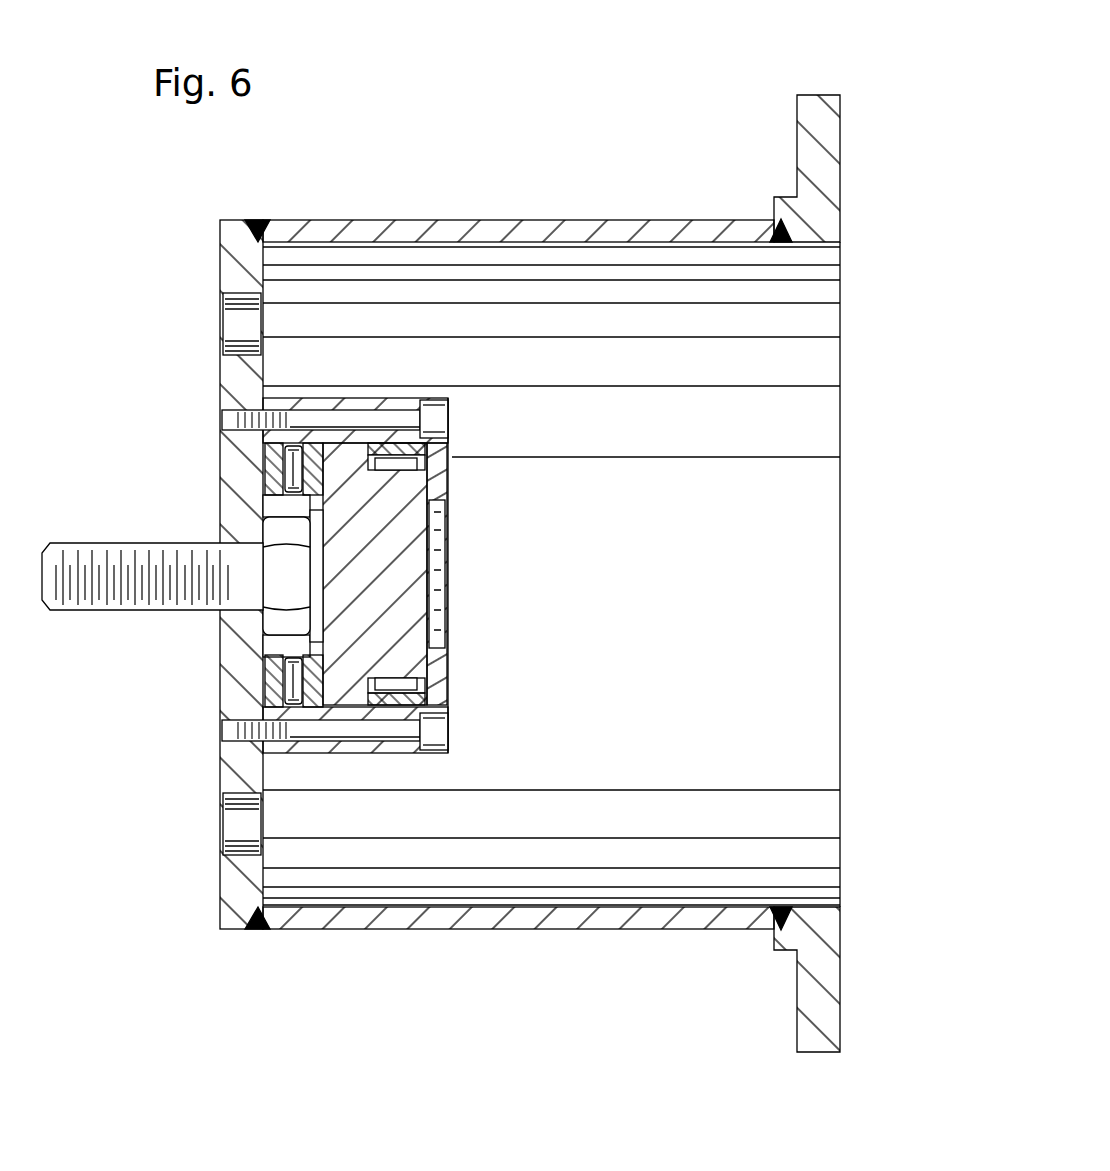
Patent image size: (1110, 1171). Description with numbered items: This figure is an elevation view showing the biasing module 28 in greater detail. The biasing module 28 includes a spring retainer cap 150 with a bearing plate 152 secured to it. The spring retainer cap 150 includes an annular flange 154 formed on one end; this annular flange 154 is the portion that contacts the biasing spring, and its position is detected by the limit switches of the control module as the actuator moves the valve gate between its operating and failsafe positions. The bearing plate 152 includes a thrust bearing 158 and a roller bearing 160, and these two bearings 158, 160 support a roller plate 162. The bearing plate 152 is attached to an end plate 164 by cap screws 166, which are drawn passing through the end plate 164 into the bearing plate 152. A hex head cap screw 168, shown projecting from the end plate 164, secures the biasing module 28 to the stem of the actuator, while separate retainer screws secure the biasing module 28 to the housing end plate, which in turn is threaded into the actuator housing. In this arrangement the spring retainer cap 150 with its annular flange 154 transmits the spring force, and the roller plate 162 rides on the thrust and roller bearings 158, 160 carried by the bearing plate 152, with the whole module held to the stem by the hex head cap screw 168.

The biasing module 28 is at (387, 122).
The spring retainer cap 150 is at (472, 220).
The bearing plate 152 is at (450, 480).
The annular flange 154 is at (815, 95).
The thrust bearing 158 is at (292, 472).
The roller bearing 160 is at (440, 675).
The roller plate 162 is at (440, 553).
The end plate 164 is at (265, 375).
The cap screws 166 is at (437, 728).
The hex head cap screw 168 is at (180, 612).